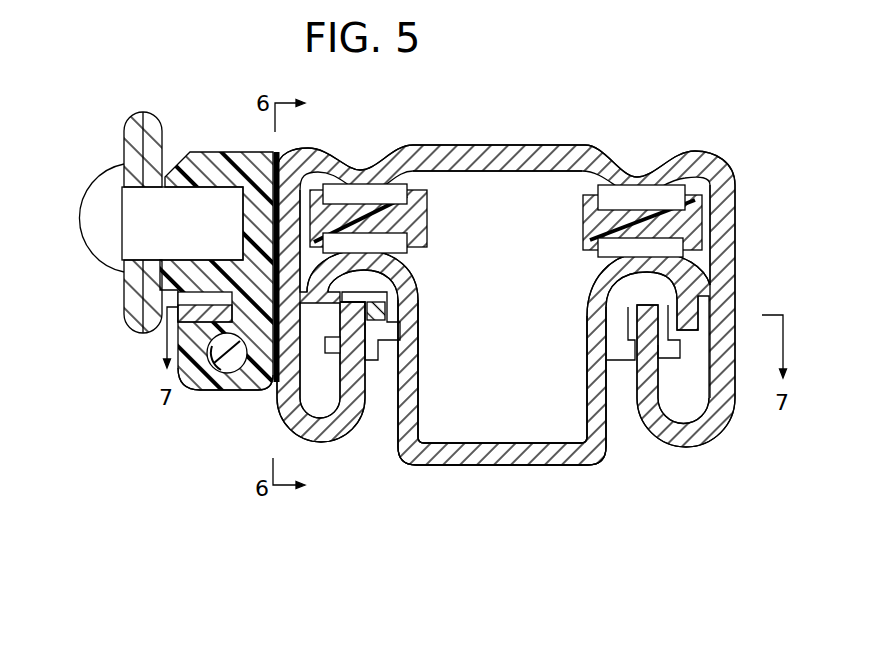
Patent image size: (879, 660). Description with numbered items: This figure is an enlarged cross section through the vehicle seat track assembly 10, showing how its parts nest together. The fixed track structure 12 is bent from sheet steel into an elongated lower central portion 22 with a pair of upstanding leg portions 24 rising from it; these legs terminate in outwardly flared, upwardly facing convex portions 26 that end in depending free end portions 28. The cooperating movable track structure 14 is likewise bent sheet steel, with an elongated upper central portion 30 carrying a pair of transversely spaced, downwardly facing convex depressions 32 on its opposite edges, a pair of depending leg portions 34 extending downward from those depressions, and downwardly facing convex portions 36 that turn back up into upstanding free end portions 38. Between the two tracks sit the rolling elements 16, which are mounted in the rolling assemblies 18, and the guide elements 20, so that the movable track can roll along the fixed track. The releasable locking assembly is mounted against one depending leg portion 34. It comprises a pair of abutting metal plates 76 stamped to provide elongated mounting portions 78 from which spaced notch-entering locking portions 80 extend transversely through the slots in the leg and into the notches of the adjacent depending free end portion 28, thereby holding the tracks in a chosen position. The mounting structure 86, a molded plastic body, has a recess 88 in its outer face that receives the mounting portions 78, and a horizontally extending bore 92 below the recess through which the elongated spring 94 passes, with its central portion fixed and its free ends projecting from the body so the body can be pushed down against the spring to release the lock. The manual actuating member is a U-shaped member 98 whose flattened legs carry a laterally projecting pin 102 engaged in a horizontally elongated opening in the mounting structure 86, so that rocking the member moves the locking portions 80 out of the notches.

The vehicle seat track assembly 10 is at (766, 130).
The fixed track structure 12 is at (492, 475).
The movable track structure 14 is at (740, 235).
The rolling elements 16 is at (427, 230).
The rolling assemblies 18 is at (433, 193).
The guide elements 20 is at (393, 332).
The lower central portion 22 is at (530, 456).
The upstanding leg portions 24 is at (412, 427).
The outwardly flared upwardly facing convex portions 26 is at (407, 274).
The depending free end portions 28 is at (695, 320).
The upper central portion 30 is at (563, 150).
The downwardly facing convex depressions 32 is at (362, 170).
The depending leg portions 34 is at (278, 413).
The downwardly facing convex portions 36 is at (327, 437).
The upstanding free end portions 38 is at (370, 378).
The abutting metal plates 76 is at (168, 285).
The mounting portions 78 is at (222, 292).
The locking portions 80 is at (390, 303).
The mounting structure 86 is at (185, 168).
The recess 88 is at (187, 263).
The bore 92 is at (207, 390).
The spring 94 is at (229, 367).
The U-shaped member 98 is at (127, 310).
The pin 102 is at (133, 207).